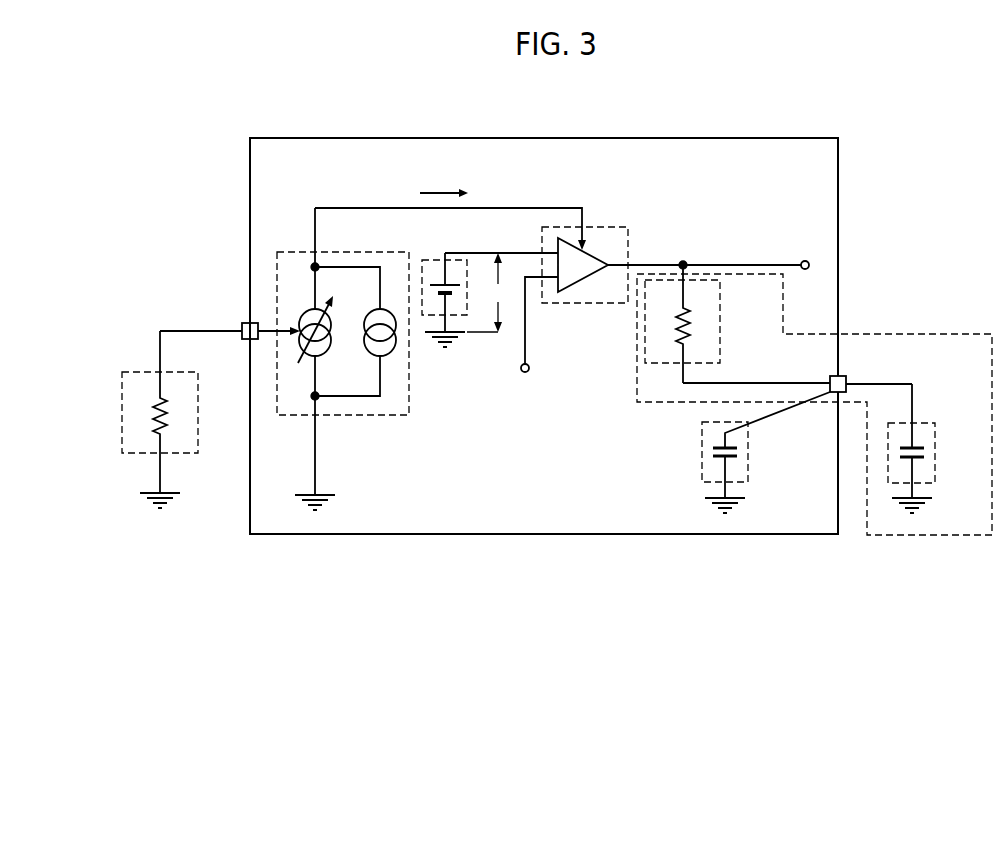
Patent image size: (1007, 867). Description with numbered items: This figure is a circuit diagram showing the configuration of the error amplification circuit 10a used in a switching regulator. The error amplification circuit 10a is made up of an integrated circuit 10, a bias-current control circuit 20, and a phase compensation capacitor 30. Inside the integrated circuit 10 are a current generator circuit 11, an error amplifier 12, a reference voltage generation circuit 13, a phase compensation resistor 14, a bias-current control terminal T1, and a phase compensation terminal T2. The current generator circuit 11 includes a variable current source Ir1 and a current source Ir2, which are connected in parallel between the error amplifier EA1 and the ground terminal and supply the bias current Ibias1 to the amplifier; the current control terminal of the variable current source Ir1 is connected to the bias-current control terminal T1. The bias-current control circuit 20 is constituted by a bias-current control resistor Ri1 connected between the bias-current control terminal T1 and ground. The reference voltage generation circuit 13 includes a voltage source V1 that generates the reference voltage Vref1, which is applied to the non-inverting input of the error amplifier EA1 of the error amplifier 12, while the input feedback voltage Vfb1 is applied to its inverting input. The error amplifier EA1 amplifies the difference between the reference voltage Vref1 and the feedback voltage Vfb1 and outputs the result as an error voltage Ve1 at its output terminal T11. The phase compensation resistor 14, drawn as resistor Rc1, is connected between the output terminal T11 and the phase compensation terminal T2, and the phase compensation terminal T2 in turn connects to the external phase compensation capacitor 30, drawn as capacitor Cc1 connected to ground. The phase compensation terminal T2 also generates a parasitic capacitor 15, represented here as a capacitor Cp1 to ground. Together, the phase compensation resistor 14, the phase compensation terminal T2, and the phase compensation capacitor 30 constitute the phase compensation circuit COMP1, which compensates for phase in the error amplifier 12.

The error amplification circuit 10a is at (808, 116).
The integrated circuit 10 is at (351, 138).
The current generator circuit 11 is at (300, 252).
The error amplifier 12 is at (600, 227).
The reference voltage generation circuit 13 is at (432, 260).
The phase compensation resistor 14 is at (721, 314).
The parasitic capacitor 15 is at (702, 452).
The bias-current control circuit 20 is at (137, 372).
The phase compensation capacitor 30 is at (932, 423).
The bias-current control terminal T1 is at (242, 323).
The phase compensation terminal T2 is at (847, 378).
The output terminal T11 is at (634, 265).
The bias-current control resistor Ri1 is at (166, 404).
The variable current source Ir1 is at (333, 322).
The current source Ir2 is at (370, 357).
The bias current Ibias1 is at (444, 184).
The voltage source V1 is at (448, 283).
The reference voltage Vref1 is at (493, 292).
The error amplifier EA1 is at (580, 280).
The input feedback voltage Vfb1 is at (533, 365).
The error voltage Ve1 is at (660, 258).
The phase compensation circuit COMP1 is at (906, 334).
The phase compensation resistor Rc1 is at (690, 318).
The capacitor Cp1 is at (737, 447).
The phase compensation capacitor Cc1 is at (924, 447).